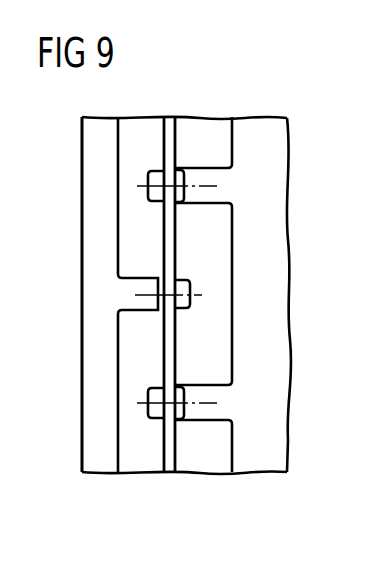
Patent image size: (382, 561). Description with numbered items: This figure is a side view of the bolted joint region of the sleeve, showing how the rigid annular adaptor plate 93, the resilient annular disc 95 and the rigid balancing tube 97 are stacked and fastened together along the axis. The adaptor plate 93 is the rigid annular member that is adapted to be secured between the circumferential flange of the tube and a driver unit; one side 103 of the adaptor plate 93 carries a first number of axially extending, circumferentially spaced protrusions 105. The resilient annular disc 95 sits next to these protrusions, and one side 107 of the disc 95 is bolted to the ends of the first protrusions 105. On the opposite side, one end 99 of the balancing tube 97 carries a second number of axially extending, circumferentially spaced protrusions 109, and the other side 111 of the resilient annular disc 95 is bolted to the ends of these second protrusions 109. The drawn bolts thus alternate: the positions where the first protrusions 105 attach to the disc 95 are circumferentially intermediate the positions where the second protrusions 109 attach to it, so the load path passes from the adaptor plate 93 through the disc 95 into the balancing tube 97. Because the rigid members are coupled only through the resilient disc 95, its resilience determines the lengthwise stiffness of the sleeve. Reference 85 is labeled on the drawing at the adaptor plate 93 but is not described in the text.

The outer wall 85 is at (94, 325).
The rigid annular adaptor plate 93 is at (94, 222).
The resilient annular disc 95 is at (166, 267).
The rigid balancing tube 97 is at (280, 313).
The one end of balancing tube 99 is at (270, 462).
The one side of annular adaptor plate 103 is at (121, 453).
The first protrusions 105 is at (143, 312).
The one side of resilient annular disc 107 is at (160, 452).
The second protrusions 109 is at (205, 197).
The other side of resilient annular disc 111 is at (177, 451).